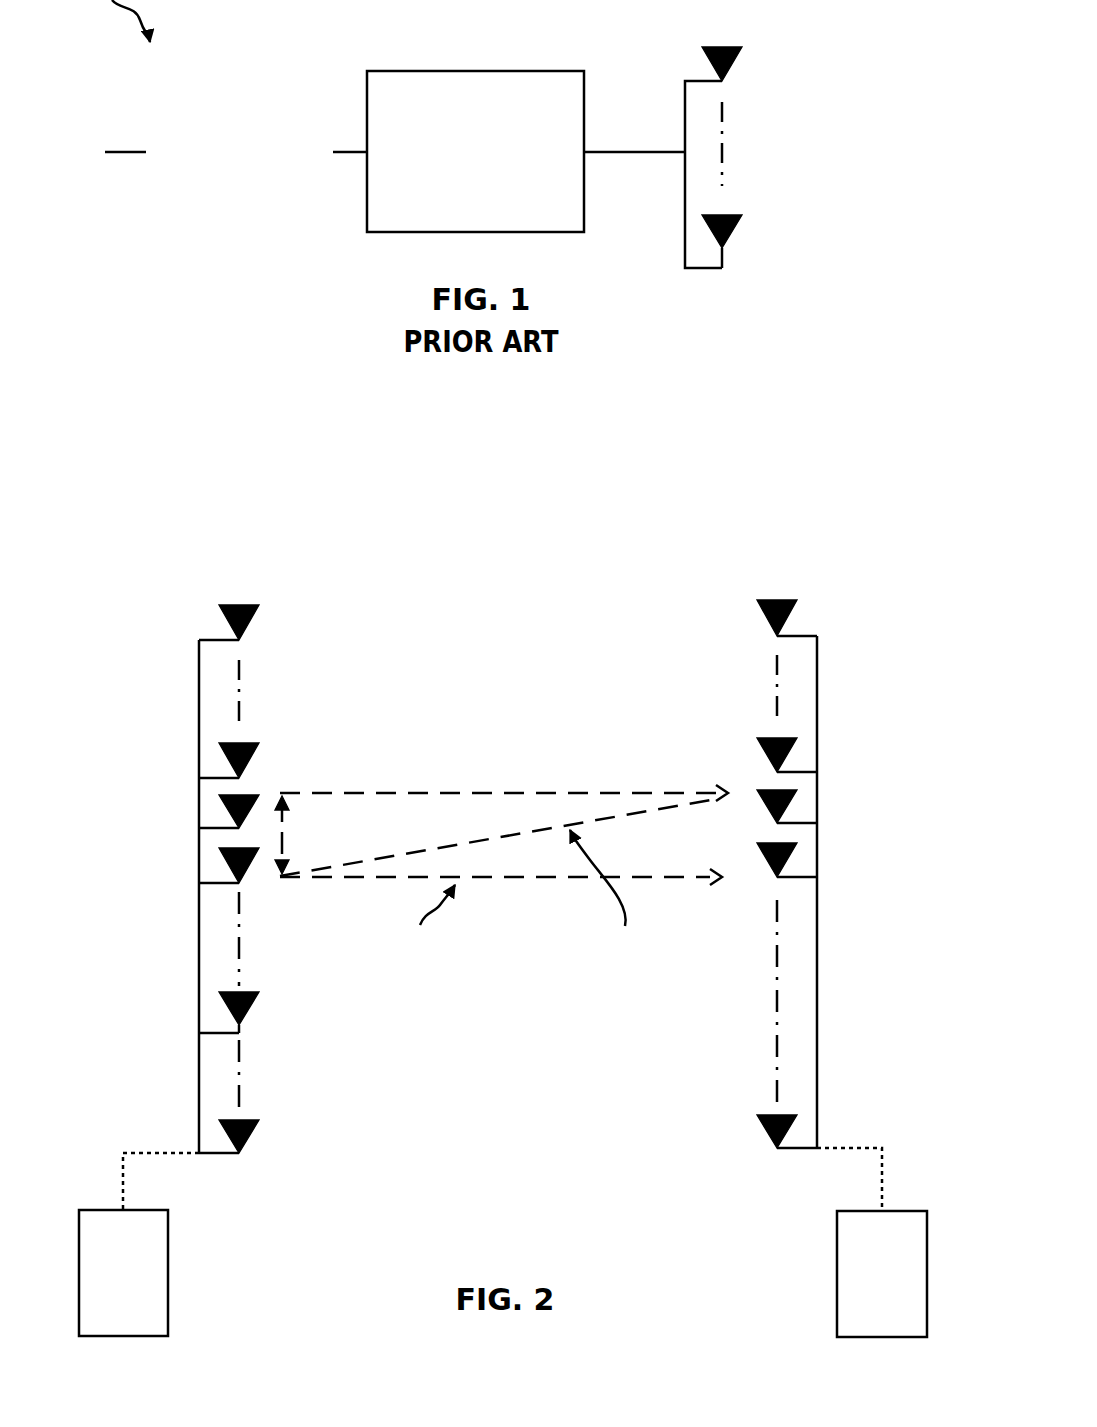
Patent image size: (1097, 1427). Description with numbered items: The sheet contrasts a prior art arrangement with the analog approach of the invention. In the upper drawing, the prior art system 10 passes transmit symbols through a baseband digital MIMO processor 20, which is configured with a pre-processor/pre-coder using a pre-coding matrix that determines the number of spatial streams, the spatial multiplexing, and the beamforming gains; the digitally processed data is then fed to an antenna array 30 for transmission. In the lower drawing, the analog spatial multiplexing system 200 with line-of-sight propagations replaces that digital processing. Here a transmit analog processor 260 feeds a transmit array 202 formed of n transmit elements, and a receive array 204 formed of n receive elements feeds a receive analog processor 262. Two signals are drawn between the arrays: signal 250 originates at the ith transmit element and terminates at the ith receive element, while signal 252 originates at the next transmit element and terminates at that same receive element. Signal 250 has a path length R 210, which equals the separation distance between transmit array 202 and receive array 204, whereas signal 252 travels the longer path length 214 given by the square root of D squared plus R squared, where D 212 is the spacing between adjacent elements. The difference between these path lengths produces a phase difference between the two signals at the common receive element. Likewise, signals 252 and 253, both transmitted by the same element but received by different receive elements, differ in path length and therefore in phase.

In FIG. 1, the prior art system 10 is at (215, 176).
In FIG. 1, the baseband digital MIMO processor 20 is at (464, 203).
In FIG. 1, the antenna array 30 is at (797, 72).
In FIG. 2, the spatial multiplexing system 200 is at (538, 582).
In FIG. 2, the transmit array 202 is at (214, 921).
In FIG. 2, the receive array 204 is at (810, 935).
In FIG. 2, the path length R 210 is at (450, 748).
In FIG. 2, the antenna spacing D 212 is at (318, 846).
In FIG. 2, the path length sqrt(D^2+R^2) 214 is at (630, 968).
In FIG. 2, the signal 250 is at (504, 793).
In FIG. 2, the signal 252 is at (498, 837).
In FIG. 2, the signal 253 is at (501, 879).
In FIG. 2, the transmit analog processor 260 is at (105, 1286).
In FIG. 2, the receive analog processor 262 is at (864, 1286).